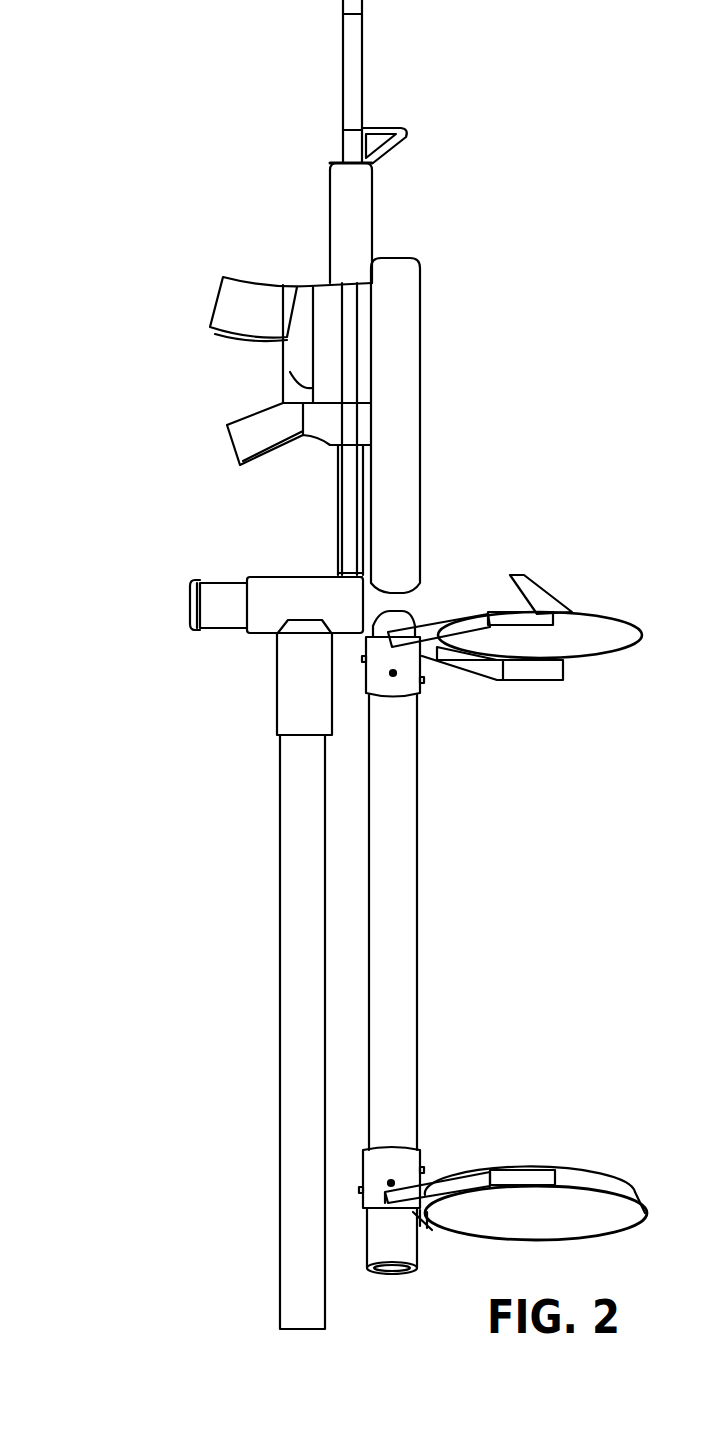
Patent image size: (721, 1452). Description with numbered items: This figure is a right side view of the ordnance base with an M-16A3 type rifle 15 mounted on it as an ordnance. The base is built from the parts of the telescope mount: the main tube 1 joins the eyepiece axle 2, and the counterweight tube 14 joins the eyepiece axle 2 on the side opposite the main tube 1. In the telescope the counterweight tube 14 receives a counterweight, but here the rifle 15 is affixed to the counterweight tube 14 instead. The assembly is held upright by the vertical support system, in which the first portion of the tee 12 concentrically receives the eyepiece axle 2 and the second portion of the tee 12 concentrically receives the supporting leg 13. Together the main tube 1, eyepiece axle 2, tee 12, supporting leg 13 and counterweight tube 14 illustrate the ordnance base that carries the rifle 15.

The main tube 1 is at (430, 881).
The eyepiece axle 2 is at (223, 570).
The tee 12 is at (268, 658).
The supporting leg 13 is at (265, 895).
The counterweight tube 14 is at (432, 339).
The M-16A3 type rifle 15 is at (245, 364).